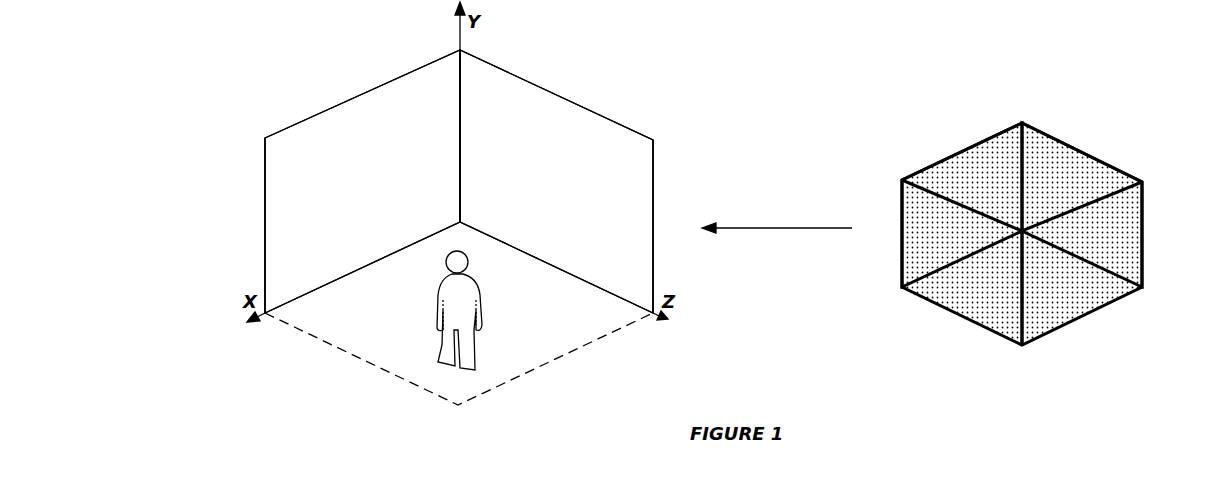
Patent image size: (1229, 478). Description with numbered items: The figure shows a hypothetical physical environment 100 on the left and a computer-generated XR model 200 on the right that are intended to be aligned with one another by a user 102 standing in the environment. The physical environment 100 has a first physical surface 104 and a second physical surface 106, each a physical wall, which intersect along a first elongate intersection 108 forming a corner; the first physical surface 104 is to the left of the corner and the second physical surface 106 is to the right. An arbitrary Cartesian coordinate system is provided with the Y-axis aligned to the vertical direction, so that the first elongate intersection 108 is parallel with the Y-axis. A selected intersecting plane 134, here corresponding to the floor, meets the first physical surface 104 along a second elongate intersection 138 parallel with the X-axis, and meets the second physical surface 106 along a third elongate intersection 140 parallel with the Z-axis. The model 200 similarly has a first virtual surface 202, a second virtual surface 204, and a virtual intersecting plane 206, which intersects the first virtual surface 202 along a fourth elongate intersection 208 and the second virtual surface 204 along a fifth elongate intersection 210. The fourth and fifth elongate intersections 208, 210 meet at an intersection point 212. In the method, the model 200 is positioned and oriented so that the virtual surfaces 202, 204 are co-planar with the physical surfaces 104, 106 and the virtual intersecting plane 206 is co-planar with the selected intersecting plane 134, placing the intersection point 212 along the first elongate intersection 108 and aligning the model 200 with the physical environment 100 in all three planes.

The physical environment 100 is at (272, 92).
The user 102 is at (466, 368).
The first physical surface 104 is at (292, 160).
The second physical surface 106 is at (620, 140).
The first elongate intersection 108 is at (470, 70).
The selected intersecting plane 134 is at (345, 352).
The second elongate intersection 138 is at (308, 290).
The third elongate intersection 140 is at (630, 298).
The model 200 is at (930, 106).
The first virtual surface 202 is at (921, 228).
The second virtual surface 204 is at (1127, 233).
The virtual intersecting plane 206 is at (975, 325).
The fourth elongate intersection 208 is at (917, 285).
The fifth elongate intersection 210 is at (1100, 268).
The intersection point 212 is at (1022, 231).